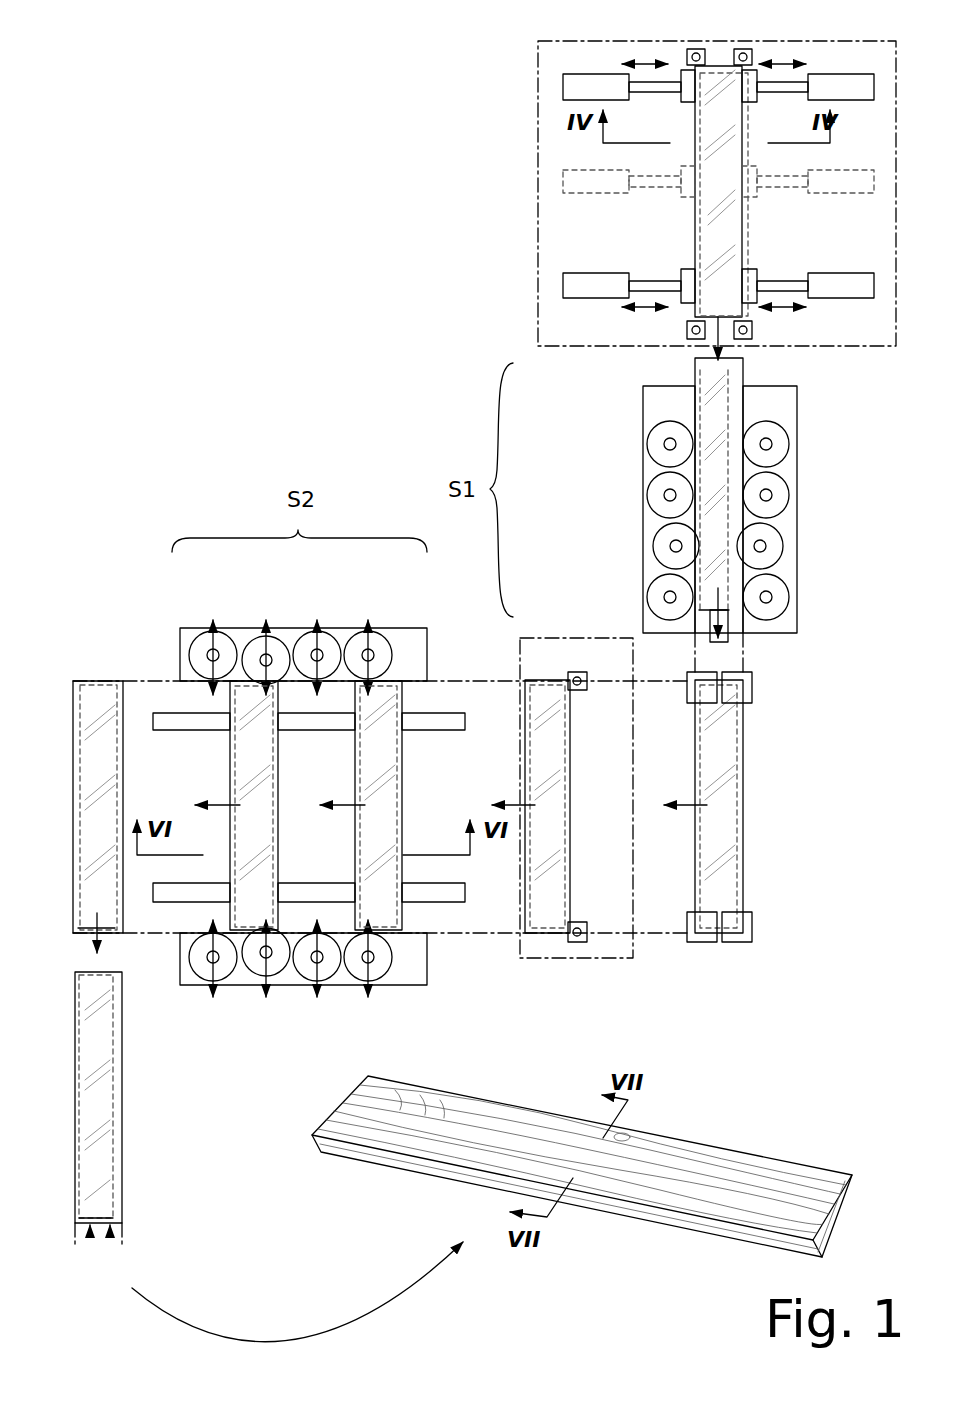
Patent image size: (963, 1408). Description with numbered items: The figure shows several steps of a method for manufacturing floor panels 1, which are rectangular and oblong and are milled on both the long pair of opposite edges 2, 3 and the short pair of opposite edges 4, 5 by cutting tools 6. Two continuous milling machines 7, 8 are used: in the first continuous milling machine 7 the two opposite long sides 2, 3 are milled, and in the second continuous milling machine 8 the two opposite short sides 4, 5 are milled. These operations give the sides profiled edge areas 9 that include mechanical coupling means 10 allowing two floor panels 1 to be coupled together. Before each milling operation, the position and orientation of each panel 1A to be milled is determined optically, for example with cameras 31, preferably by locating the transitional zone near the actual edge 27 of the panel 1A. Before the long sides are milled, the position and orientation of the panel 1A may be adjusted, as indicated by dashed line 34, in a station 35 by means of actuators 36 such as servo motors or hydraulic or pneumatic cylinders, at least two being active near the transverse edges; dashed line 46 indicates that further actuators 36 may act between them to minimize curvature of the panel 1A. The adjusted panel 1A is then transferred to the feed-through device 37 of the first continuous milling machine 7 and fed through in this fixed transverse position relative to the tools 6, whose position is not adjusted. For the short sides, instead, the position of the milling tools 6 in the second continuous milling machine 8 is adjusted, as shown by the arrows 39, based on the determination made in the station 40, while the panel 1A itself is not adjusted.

The floor panel 1 is at (737, 125).
The panel to be processed 1A is at (688, 382).
The long opposite edge 2 is at (743, 795).
The long opposite edge 3 is at (700, 790).
The short opposite edge 4 is at (90, 1227).
The short opposite edge 5 is at (102, 677).
The cutting tools 6 is at (662, 548).
The first continuous milling machine 7 is at (772, 635).
The second continuous milling machine 8 is at (180, 653).
The profiled edge area 9 is at (108, 973).
The mechanical coupling means 10 is at (762, 1238).
The actual edge of the panel 27 is at (695, 237).
The cameras 31 is at (747, 48).
The dashed line 34 is at (693, 127).
The station 35 is at (538, 162).
The actuators 36 is at (573, 90).
The feed-through device 37 is at (708, 408).
The arrows 39 is at (262, 652).
The station 40 is at (520, 662).
The dashed line 46 is at (575, 192).